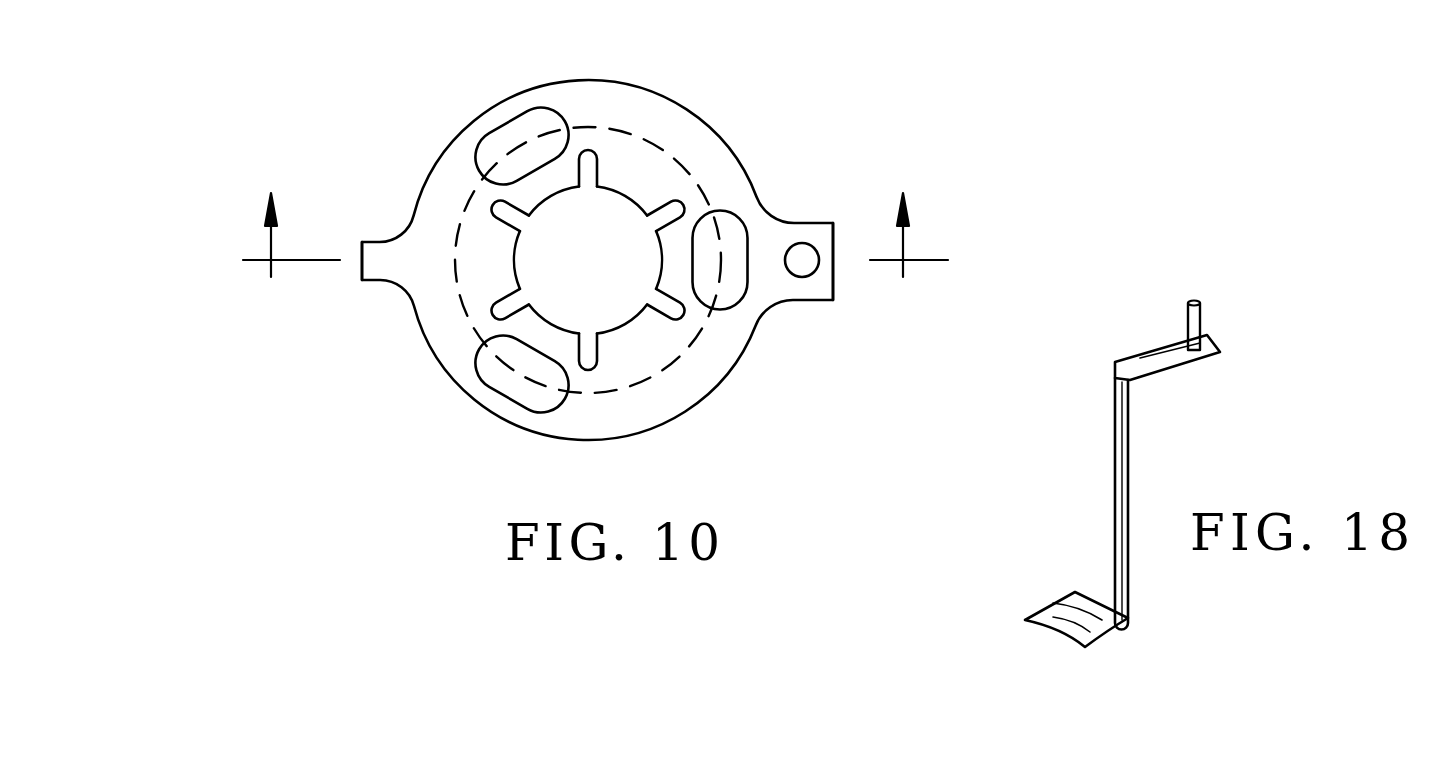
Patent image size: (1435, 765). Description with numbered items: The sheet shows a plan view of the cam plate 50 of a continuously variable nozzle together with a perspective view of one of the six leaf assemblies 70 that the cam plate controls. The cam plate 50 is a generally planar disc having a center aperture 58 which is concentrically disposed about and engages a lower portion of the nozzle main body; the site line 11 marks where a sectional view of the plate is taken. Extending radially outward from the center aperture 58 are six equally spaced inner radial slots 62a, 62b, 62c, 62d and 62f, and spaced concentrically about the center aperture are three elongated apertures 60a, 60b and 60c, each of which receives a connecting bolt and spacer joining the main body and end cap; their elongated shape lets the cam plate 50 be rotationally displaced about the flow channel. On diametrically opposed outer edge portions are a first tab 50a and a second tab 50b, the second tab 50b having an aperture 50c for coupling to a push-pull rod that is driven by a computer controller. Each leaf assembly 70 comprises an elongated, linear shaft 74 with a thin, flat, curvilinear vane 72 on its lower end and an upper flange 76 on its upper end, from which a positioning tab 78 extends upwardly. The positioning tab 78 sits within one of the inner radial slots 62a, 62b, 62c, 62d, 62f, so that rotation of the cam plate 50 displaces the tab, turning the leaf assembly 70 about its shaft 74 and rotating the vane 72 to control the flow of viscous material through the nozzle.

In FIG. 10, the site line 11 is at (594, 236).
In FIG. 10, the cam plate 50 is at (730, 124).
In FIG. 10, the first tab 50a is at (380, 270).
In FIG. 10, the second tab 50b is at (808, 222).
In FIG. 10, the aperture 50c is at (806, 278).
In FIG. 10, the center aperture 58 is at (642, 335).
In FIG. 10, the elongated aperture 60a is at (500, 150).
In FIG. 10, the elongated aperture 60b is at (745, 300).
In FIG. 10, the elongated aperture 60c is at (510, 385).
In FIG. 10, the inner radial slot 62a is at (596, 162).
In FIG. 10, the inner radial slot 62b is at (693, 210).
In FIG. 10, the inner radial slot 62c is at (702, 335).
In FIG. 10, the inner radial slot 62d is at (594, 350).
In FIG. 10, the inner radial slot 62f is at (496, 208).
In FIG. 18, the leaf assembly 70 is at (1052, 475).
In FIG. 18, the vane 72 is at (1052, 603).
In FIG. 18, the elongated, linear shaft 74 is at (1128, 477).
In FIG. 18, the upper flange 76 is at (1140, 358).
In FIG. 18, the positioning tab 78 is at (1183, 318).